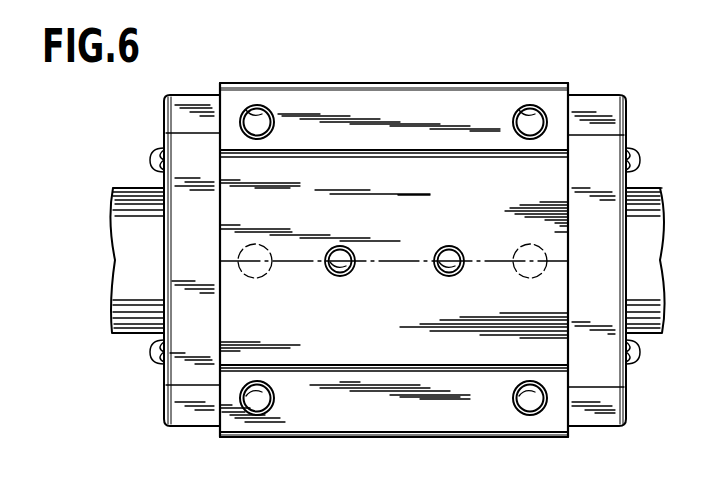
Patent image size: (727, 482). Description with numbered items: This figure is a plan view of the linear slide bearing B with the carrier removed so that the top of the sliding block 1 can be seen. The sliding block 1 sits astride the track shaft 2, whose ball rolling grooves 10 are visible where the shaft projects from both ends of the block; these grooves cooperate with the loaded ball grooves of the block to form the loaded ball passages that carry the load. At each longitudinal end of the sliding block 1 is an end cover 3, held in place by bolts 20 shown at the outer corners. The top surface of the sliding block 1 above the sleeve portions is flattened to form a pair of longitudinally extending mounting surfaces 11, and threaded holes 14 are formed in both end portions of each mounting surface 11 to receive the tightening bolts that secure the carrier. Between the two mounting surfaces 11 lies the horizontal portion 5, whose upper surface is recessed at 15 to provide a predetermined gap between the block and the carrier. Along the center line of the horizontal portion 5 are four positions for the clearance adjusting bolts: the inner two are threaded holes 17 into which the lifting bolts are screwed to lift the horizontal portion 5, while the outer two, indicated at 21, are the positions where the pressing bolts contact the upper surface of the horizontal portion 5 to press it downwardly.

The sliding block 1 is at (313, 83).
The linear slide bearing B is at (452, 83).
The track shaft 2 is at (133, 188).
The end cover 3 is at (196, 95).
The horizontal portion 5 is at (400, 353).
The ball rolling groove 10 is at (112, 204).
The mounting surface 11 is at (364, 105).
The threaded hole 14 is at (260, 110).
The recess 15 is at (310, 331).
The threaded hole 17 is at (344, 276).
The bolt 20 is at (150, 162).
The contact position 21 is at (246, 277).